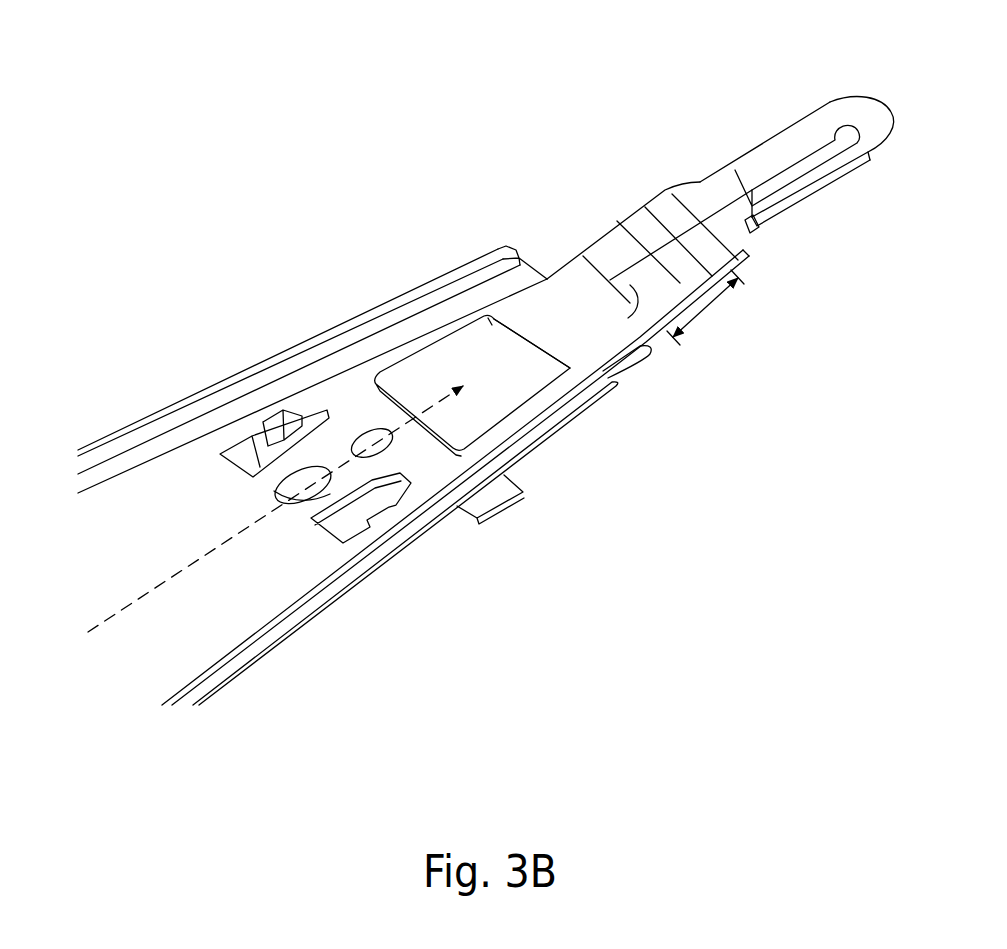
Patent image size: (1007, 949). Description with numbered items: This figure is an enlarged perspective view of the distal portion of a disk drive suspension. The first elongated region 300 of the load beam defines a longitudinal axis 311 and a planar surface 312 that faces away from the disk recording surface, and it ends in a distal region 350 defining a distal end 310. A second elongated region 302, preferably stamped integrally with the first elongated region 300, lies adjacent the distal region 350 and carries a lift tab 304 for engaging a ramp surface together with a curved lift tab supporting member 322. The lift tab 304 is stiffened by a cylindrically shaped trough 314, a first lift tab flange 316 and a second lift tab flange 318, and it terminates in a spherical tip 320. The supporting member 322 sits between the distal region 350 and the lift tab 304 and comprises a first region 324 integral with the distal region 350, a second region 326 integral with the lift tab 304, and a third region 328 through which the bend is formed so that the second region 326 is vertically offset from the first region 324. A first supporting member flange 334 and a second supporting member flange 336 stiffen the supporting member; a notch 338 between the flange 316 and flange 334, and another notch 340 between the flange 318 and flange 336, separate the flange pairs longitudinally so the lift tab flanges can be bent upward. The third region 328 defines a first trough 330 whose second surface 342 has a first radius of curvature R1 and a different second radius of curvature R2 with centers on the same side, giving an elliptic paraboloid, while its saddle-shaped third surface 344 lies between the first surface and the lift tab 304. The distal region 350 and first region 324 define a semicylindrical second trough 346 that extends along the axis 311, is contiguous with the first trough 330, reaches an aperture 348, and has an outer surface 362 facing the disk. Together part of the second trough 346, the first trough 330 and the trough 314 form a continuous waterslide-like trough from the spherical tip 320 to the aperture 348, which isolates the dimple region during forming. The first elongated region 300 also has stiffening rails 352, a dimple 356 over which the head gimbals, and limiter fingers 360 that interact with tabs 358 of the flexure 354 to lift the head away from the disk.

The first elongated region 300 is at (170, 498).
The second elongated region 302 is at (758, 268).
The lift tab 304 is at (835, 132).
The distal end 310 is at (547, 279).
The longitudinal axis 311 is at (150, 652).
The planar surface 312 is at (290, 564).
The cylindrically shaped trough 314 is at (817, 160).
The first lift tab flange 316 is at (843, 181).
The second lift tab flange 318 is at (735, 160).
The spherical tip 320 is at (882, 97).
The curved lift tab supporting member 322 is at (627, 228).
The first region 324 is at (650, 325).
The second region 326 is at (676, 190).
The third region 328 is at (720, 300).
The first trough 330 is at (650, 252).
The first supporting member flange 334 is at (748, 250).
The second supporting member flange 336 is at (640, 207).
The notch 338 is at (752, 233).
The notch 340 is at (700, 190).
The second surface 342 is at (617, 315).
The third surface 344 is at (668, 233).
The second trough 346 is at (563, 330).
The aperture 348 is at (571, 388).
The distal region 350 is at (530, 300).
The rails 352 is at (622, 360).
The flexure 354 is at (484, 516).
The dimple 356 is at (357, 430).
The tabs 358 is at (293, 418).
The limiter fingers 360 is at (270, 445).
The outer surface 362 is at (523, 340).
The first radius of curvature R1 is at (606, 296).
The second radius of curvature R2 is at (610, 297).